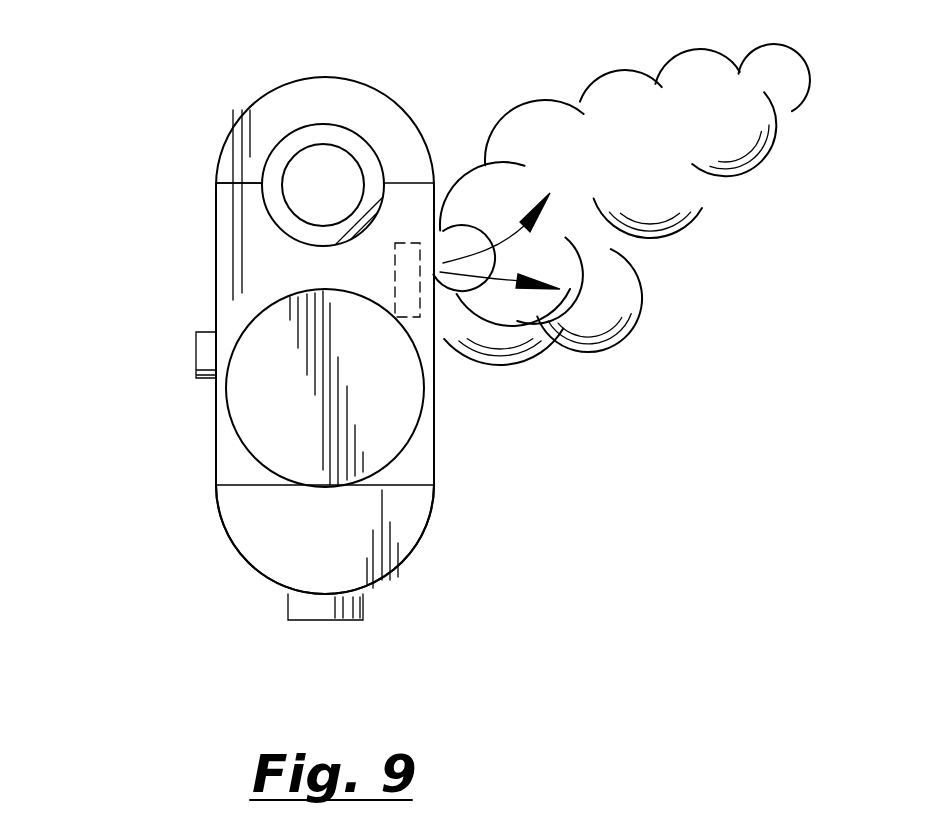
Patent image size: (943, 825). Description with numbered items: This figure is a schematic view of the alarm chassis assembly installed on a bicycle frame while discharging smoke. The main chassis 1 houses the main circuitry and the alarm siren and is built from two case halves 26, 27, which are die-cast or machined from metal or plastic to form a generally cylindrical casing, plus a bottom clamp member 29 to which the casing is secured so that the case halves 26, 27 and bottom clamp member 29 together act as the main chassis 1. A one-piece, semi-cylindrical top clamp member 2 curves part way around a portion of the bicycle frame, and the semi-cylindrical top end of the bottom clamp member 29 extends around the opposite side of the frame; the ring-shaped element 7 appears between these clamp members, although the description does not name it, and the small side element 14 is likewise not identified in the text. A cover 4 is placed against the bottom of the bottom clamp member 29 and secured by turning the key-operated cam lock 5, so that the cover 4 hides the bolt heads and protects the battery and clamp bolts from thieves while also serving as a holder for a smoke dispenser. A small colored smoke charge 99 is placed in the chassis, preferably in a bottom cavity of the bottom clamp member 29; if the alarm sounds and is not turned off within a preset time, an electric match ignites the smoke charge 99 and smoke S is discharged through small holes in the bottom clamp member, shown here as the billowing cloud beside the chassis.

The main chassis 1 is at (100, 240).
The top clamp member 2 is at (338, 82).
The ring aperture 7 is at (357, 140).
The bottom clamp member 29 is at (233, 200).
The case half 26 is at (305, 291).
The case half 27 is at (250, 452).
The actuator button 14 is at (205, 361).
The cover 4 is at (235, 547).
The key-operated cam lock 5 is at (290, 605).
The smoke charge 99 is at (413, 298).
The smoke S is at (780, 97).